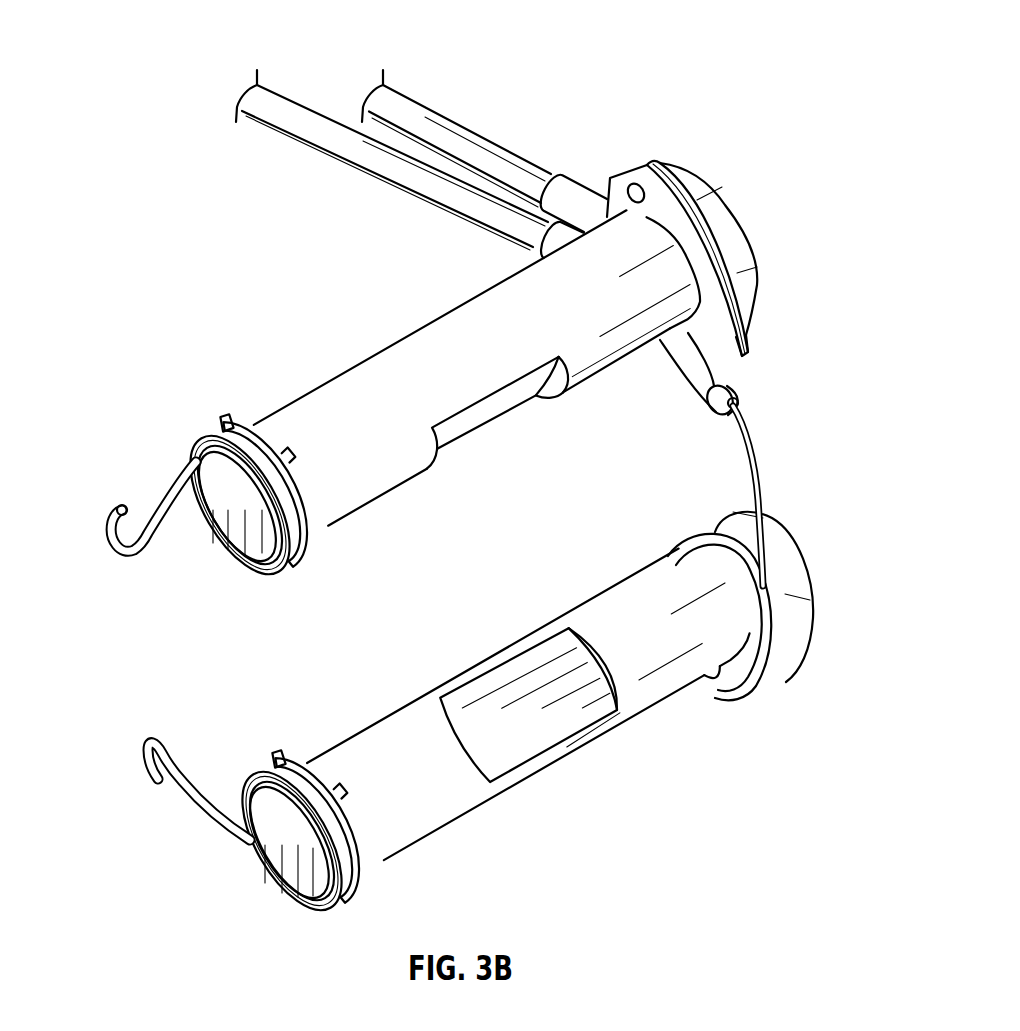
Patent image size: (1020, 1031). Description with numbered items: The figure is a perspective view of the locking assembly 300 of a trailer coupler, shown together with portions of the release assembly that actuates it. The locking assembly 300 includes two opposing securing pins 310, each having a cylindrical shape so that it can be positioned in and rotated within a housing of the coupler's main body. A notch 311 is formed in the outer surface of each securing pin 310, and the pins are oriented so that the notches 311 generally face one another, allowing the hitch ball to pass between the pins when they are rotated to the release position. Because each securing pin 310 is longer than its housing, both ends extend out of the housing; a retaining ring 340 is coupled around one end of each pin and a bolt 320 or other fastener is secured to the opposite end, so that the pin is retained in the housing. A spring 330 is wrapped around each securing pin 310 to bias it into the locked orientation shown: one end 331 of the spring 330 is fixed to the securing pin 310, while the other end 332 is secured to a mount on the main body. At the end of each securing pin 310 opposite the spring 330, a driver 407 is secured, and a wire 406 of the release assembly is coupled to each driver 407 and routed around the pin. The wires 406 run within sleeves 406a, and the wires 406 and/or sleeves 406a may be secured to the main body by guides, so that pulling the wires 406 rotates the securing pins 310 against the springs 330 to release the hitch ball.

The locking assembly 300 is at (116, 32).
The securing pin 310 is at (318, 392).
The notch 311 is at (480, 422).
The bolt 320 is at (747, 235).
The spring 330 is at (248, 566).
The end of spring 331 is at (318, 505).
The end of spring 332 is at (114, 532).
The retaining ring 340 is at (320, 547).
The wire 406 is at (750, 352).
The sleeve 406a is at (505, 150).
The driver 407 is at (698, 170).